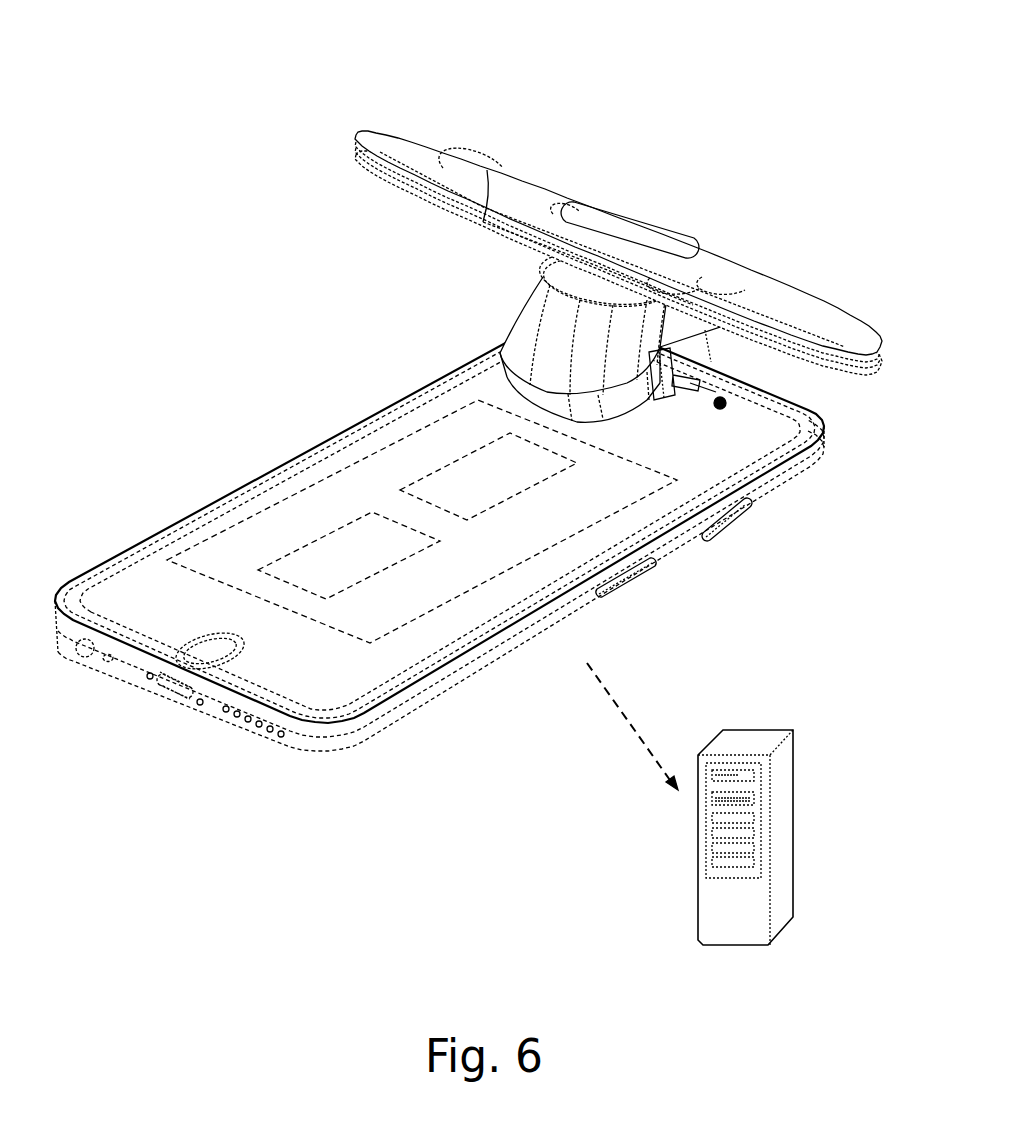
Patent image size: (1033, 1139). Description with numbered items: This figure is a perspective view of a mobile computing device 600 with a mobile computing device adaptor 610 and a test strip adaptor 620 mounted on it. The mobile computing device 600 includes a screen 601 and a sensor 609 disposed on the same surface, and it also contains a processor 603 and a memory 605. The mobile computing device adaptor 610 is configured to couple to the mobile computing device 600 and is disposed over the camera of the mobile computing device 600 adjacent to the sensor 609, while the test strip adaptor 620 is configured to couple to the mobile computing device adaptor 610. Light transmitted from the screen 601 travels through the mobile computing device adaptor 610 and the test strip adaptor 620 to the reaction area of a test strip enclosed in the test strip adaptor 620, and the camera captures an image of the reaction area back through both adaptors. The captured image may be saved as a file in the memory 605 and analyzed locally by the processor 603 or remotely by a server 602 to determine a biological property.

The mobile computing device 600 is at (155, 479).
The screen 601 is at (722, 452).
The server 602 is at (793, 852).
The processor 603 is at (452, 497).
The memory 605 is at (330, 550).
The sensor 609 is at (728, 403).
The mobile computing device adaptor 610 is at (470, 294).
The test strip adaptor 620 is at (572, 170).